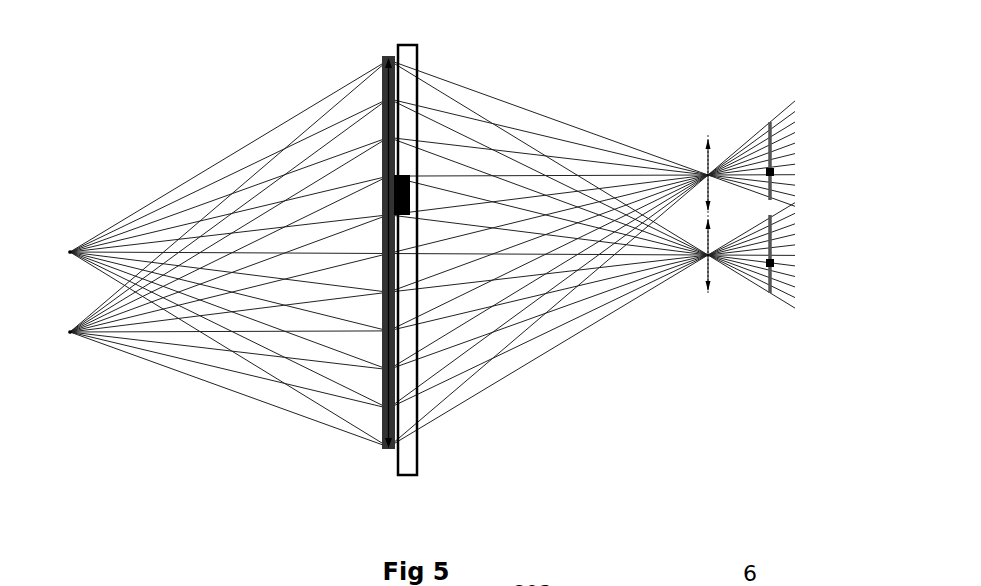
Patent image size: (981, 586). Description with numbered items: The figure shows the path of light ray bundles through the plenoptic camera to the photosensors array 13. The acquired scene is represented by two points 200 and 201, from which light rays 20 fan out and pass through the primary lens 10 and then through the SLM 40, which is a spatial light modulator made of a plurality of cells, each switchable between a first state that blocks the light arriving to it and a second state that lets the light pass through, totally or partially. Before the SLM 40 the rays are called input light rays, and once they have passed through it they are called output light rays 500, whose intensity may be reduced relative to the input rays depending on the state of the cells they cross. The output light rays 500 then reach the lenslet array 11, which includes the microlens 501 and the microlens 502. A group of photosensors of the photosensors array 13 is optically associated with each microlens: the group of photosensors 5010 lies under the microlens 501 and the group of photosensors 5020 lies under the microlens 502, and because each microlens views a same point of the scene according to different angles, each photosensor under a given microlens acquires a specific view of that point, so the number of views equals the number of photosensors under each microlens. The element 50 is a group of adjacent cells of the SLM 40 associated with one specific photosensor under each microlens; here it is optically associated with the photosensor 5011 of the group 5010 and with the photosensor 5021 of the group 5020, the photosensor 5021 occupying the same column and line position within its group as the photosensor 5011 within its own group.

The light rays 20 is at (212, 181).
The primary lens 10 is at (362, 38).
The point of the scene 200 is at (69, 250).
The point of the scene 201 is at (68, 335).
The group of cells 50 is at (410, 175).
The SLM 40 is at (418, 455).
The output light rays 500 is at (544, 320).
The microlens 501 is at (703, 165).
The microlens 502 is at (702, 268).
The lenslet array 11 is at (706, 107).
The group of photosensors 5010 is at (771, 137).
The photosensor 5011 is at (778, 172).
The group of photosensors 5020 is at (773, 243).
The photosensor 5021 is at (778, 265).
The photosensors array 13 is at (772, 333).